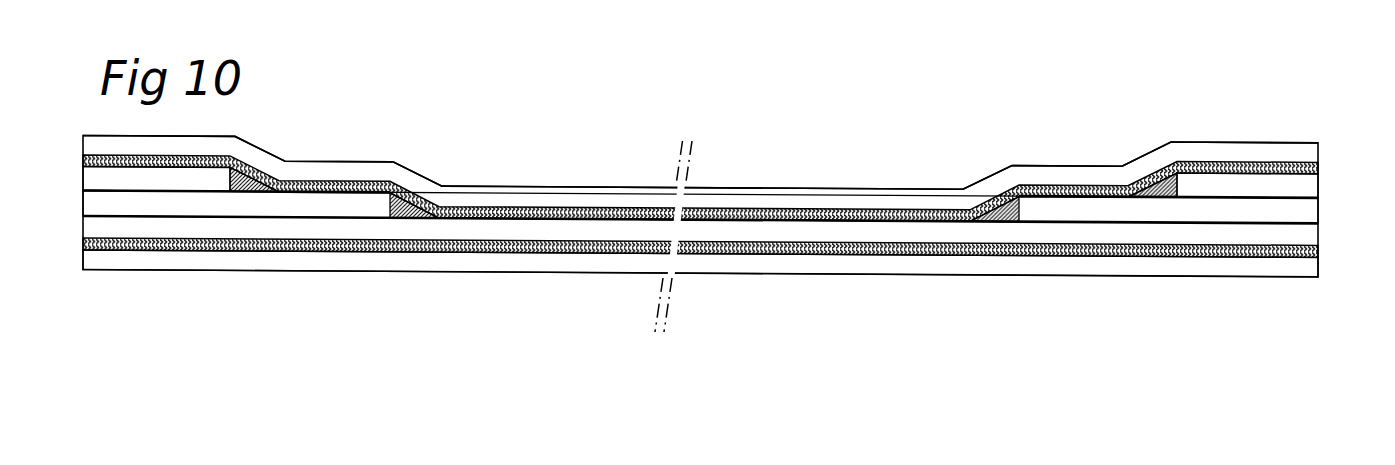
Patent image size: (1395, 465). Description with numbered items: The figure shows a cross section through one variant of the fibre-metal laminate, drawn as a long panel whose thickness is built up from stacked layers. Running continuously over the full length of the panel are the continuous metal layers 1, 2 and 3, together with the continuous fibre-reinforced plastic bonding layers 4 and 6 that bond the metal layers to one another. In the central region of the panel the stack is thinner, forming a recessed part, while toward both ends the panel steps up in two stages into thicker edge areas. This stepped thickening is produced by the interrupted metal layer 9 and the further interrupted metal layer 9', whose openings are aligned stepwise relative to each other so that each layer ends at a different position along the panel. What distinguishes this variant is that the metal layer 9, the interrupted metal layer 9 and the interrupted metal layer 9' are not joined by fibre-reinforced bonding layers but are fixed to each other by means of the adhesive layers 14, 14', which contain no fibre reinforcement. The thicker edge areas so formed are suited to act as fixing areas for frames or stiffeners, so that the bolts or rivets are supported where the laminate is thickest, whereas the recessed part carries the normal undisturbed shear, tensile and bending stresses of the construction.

The continuous metal layer 1 is at (1300, 279).
The continuous metal layer 2 is at (1317, 250).
The continuous metal layer 3 is at (1299, 151).
The fibre-reinforced plastic bonding layer 4 is at (1317, 258).
The fibre-reinforced plastic bonding layer 6 is at (1320, 164).
The discontinuous metal layer 9 is at (729, 206).
The further discontinuous metal layer 9' is at (730, 175).
The adhesive layer 14 is at (732, 232).
The adhesive layer 14' is at (737, 188).